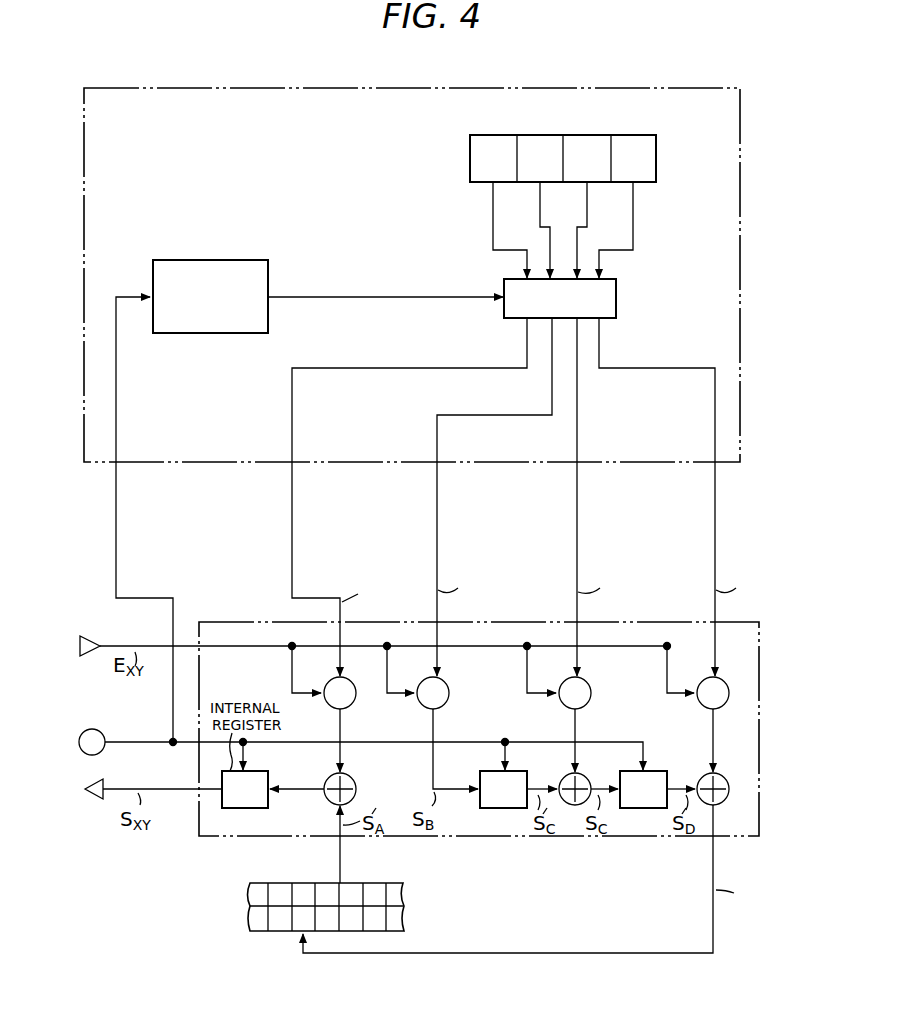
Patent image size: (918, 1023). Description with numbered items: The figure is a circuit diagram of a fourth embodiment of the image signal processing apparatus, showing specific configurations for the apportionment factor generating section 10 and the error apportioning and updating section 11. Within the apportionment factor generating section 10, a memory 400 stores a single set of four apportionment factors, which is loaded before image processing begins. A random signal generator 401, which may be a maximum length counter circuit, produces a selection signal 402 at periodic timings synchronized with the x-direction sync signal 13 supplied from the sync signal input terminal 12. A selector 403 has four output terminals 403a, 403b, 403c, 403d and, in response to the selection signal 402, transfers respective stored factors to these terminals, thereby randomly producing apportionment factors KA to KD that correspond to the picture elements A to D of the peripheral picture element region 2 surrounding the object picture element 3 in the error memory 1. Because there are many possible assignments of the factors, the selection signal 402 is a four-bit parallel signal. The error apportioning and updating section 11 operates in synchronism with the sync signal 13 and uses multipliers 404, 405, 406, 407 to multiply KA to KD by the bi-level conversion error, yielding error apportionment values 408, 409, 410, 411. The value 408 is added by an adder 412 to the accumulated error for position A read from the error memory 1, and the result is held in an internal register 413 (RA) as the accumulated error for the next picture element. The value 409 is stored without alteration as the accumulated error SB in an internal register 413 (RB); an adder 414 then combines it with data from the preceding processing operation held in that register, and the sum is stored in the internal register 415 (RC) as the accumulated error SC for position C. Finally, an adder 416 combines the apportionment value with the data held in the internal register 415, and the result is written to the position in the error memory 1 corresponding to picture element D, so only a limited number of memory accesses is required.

The error memory 1 is at (397, 883).
The peripheral picture element region 2 is at (363, 918).
The objective picture element 3 is at (328, 883).
The apportionment factor generating section 10 is at (283, 462).
The error apportioning and updating section 11 is at (205, 838).
The sync signal input terminal 12 is at (101, 733).
The x-direction sync signal 13 is at (160, 598).
The memory 400 is at (494, 135).
The random signal generator 401 is at (250, 260).
The selection signal 402 is at (318, 297).
The selector 403 is at (618, 292).
The output terminal 403a is at (527, 328).
The output terminal 403b is at (552, 346).
The output terminal 403c is at (577, 346).
The output terminal 403d is at (599, 328).
The multiplier 404 is at (326, 683).
The multiplier 405 is at (445, 683).
The multiplier 406 is at (587, 683).
The multiplier 407 is at (702, 681).
The error apportionment value 408 is at (342, 722).
The error apportionment value 409 is at (435, 724).
The error apportionment value 410 is at (577, 724).
The error apportionment value 411 is at (713, 722).
The adder 412 is at (352, 781).
The internal register 413 is at (262, 771).
The adder 414 is at (587, 775).
The internal register 415 is at (657, 771).
The adder 416 is at (725, 775).